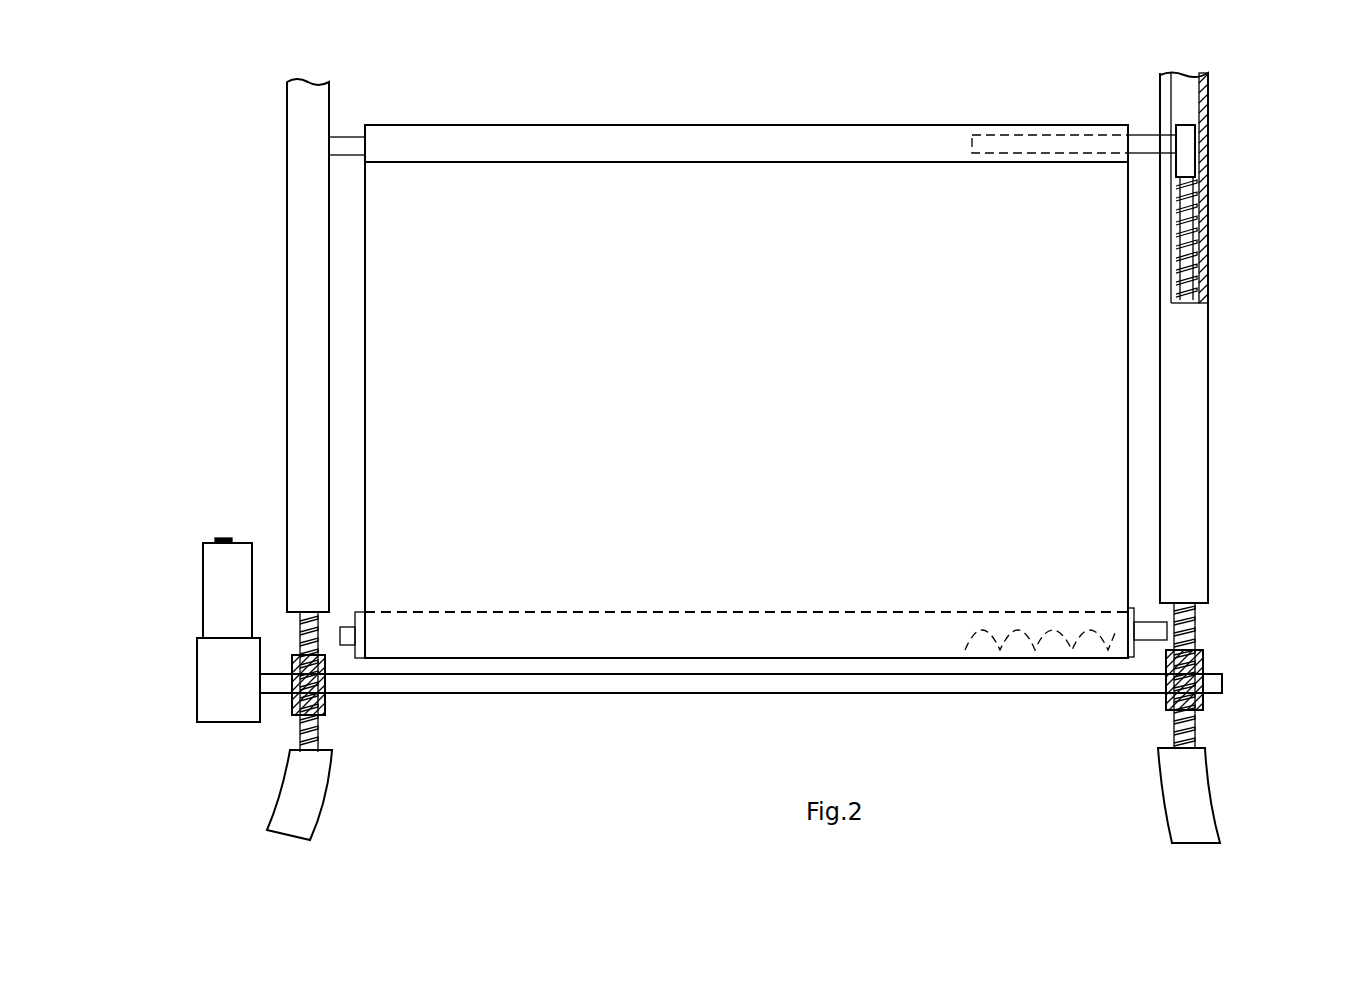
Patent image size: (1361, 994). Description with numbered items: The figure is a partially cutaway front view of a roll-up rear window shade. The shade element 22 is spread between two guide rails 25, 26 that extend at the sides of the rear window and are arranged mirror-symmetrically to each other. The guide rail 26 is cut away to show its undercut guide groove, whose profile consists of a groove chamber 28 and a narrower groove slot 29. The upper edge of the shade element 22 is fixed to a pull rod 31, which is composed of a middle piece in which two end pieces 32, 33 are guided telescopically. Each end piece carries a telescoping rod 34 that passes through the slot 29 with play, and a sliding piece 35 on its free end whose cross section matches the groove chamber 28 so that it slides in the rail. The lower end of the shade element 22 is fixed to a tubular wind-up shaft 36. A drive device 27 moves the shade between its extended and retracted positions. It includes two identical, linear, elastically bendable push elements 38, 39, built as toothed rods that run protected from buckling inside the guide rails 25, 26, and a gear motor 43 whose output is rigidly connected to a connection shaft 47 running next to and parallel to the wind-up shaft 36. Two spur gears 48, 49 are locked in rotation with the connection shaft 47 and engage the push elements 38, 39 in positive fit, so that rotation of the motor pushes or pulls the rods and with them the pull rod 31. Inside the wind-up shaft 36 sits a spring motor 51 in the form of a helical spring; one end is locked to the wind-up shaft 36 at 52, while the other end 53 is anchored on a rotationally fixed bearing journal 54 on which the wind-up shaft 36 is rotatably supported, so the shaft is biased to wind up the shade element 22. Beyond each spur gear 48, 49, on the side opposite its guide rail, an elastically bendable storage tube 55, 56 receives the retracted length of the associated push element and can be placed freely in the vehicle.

The shade element 22 is at (754, 415).
The guide rail 25 is at (255, 350).
The guide rail 26 is at (1218, 442).
The drive device 27 is at (172, 732).
The groove chamber 28 is at (1185, 110).
The groove slot 29 is at (1162, 105).
The pull rod 31 is at (762, 163).
The end piece 32 is at (355, 105).
The end piece 33 is at (1112, 104).
The telescoping rod 34 is at (1136, 142).
The sliding piece 35 is at (1185, 160).
The wind-up shaft 36 is at (413, 613).
The push element 38 is at (348, 729).
The push element 39 is at (1215, 727).
The gear motor 43 is at (190, 518).
The connection shaft 47 is at (750, 693).
The spur gear 48 is at (292, 712).
The spur gear 49 is at (1200, 650).
The spring motor 51 is at (990, 612).
The spring end locked to wind-up shaft 52 is at (958, 645).
The other spring end 53 is at (1115, 633).
The bearing journal 54 is at (1155, 620).
The storage tube 55 is at (318, 785).
The storage tube 56 is at (1190, 787).